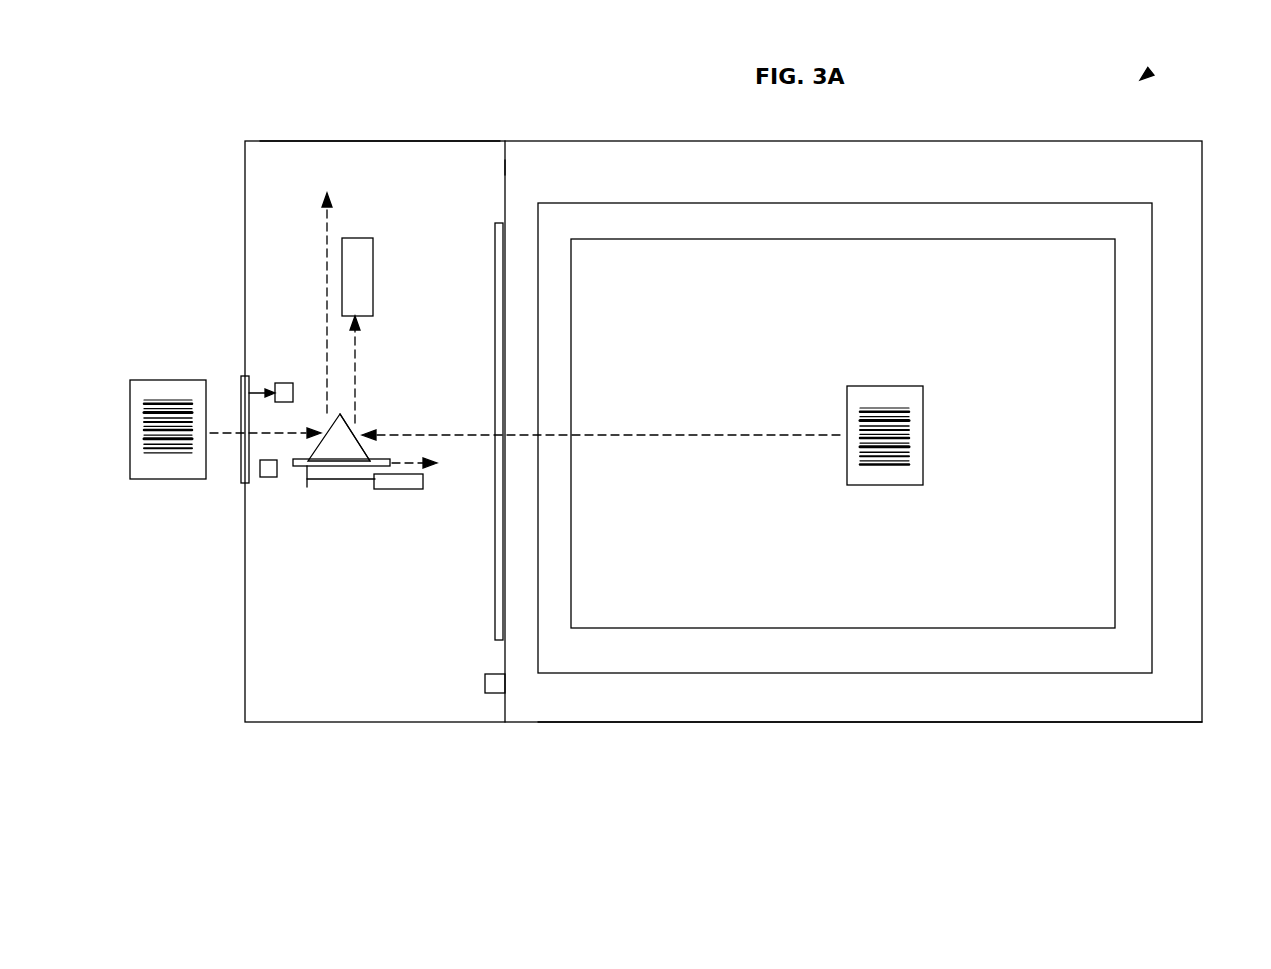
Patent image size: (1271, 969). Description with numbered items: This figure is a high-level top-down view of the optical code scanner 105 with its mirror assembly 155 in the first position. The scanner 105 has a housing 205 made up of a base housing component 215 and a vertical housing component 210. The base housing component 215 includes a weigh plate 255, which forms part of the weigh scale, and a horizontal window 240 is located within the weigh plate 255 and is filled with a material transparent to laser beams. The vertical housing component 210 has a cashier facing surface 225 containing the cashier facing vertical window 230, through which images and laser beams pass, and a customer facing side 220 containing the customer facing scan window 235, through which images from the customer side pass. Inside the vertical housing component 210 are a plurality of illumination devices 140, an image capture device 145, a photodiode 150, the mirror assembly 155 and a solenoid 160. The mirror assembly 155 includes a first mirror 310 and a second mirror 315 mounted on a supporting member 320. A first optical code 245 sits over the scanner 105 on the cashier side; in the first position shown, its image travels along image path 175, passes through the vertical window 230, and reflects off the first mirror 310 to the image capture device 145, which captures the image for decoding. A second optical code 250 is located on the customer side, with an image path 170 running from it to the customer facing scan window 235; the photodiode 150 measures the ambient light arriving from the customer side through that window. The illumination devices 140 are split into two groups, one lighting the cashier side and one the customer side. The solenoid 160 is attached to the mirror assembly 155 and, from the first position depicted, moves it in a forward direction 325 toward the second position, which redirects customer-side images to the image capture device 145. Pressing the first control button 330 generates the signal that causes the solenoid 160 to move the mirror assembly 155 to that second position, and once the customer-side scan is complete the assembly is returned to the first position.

The scanner 105 is at (1146, 74).
The housing 205 is at (315, 722).
The vertical housing component 210 is at (380, 170).
The base housing component 215 is at (743, 703).
The customer facing side 220 is at (246, 160).
The cashier facing surface 225 is at (507, 167).
The cashier facing vertical window 230 is at (507, 237).
The customer facing scan window 235 is at (240, 380).
The horizontal window 240 is at (1116, 402).
The first optical code 245 is at (880, 386).
The second optical code 250 is at (130, 412).
The weigh plate 255 is at (1152, 589).
The illumination devices 140 is at (266, 480).
The image capture device 145 is at (376, 270).
The photodiode 150 is at (282, 383).
The mirror assembly 155 is at (339, 442).
The solenoid 160 is at (392, 490).
The image path 170 is at (325, 288).
The image path 175 is at (356, 383).
The first mirror 310 is at (355, 449).
The second mirror 315 is at (341, 416).
The supporting member 320 is at (308, 461).
The forward direction 325 is at (430, 468).
The first control button 330 is at (490, 693).